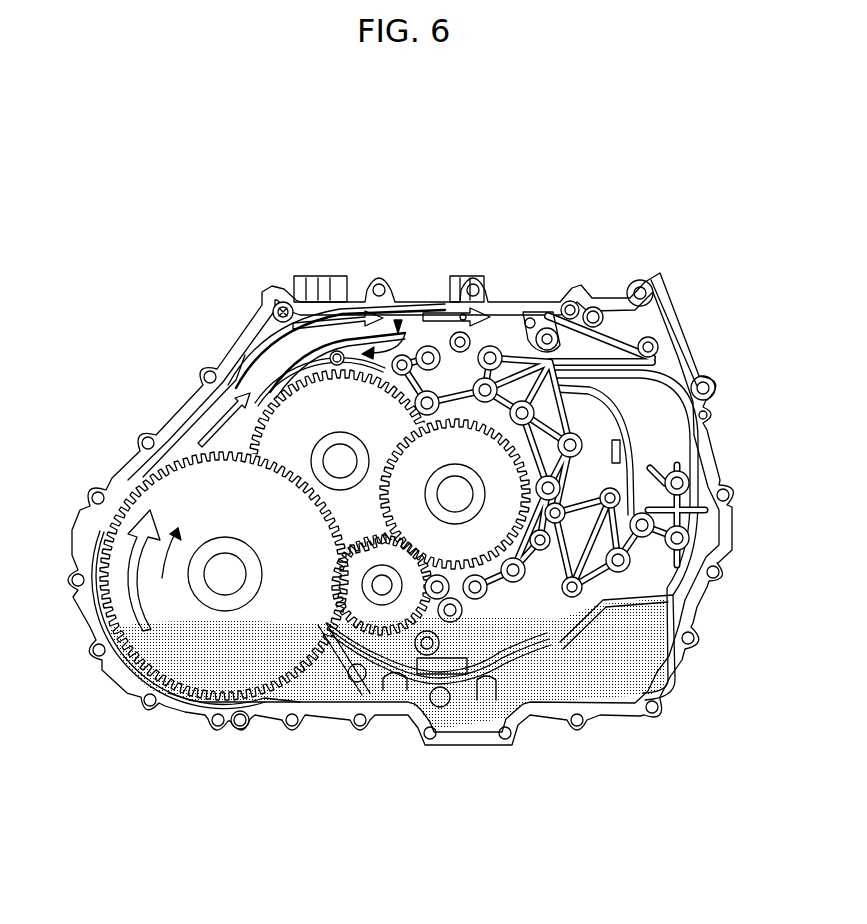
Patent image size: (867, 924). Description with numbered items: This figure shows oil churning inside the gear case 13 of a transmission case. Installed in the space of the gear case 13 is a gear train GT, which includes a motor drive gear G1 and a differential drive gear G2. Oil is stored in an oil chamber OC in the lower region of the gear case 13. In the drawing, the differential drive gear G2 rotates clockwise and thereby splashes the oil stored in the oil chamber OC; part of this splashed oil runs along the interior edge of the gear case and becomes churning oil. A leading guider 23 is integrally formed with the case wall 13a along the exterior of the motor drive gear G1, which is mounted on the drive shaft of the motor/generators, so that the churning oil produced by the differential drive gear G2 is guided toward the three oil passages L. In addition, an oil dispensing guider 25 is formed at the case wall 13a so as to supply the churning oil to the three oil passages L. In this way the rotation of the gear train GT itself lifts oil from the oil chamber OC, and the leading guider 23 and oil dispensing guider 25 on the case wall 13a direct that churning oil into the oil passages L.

The gear case 13 is at (707, 447).
The case wall 13a is at (398, 320).
The oil dispensing guider 25 is at (463, 312).
The leading guider 23 is at (267, 387).
The oil passages L is at (333, 355).
The motor drive gear G1 is at (253, 441).
The differential drive gear G2 is at (130, 493).
The gear train GT is at (497, 597).
The oil chamber OC is at (618, 677).